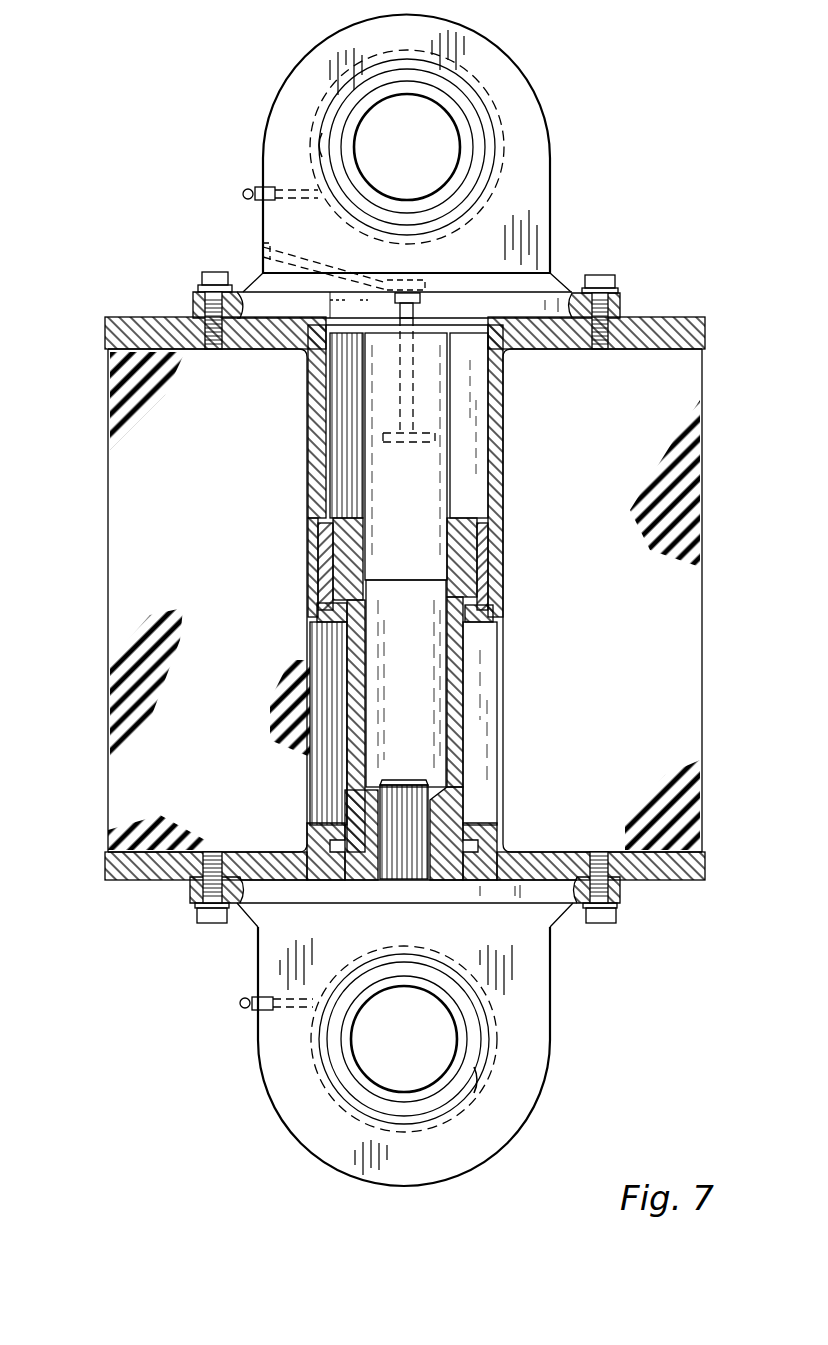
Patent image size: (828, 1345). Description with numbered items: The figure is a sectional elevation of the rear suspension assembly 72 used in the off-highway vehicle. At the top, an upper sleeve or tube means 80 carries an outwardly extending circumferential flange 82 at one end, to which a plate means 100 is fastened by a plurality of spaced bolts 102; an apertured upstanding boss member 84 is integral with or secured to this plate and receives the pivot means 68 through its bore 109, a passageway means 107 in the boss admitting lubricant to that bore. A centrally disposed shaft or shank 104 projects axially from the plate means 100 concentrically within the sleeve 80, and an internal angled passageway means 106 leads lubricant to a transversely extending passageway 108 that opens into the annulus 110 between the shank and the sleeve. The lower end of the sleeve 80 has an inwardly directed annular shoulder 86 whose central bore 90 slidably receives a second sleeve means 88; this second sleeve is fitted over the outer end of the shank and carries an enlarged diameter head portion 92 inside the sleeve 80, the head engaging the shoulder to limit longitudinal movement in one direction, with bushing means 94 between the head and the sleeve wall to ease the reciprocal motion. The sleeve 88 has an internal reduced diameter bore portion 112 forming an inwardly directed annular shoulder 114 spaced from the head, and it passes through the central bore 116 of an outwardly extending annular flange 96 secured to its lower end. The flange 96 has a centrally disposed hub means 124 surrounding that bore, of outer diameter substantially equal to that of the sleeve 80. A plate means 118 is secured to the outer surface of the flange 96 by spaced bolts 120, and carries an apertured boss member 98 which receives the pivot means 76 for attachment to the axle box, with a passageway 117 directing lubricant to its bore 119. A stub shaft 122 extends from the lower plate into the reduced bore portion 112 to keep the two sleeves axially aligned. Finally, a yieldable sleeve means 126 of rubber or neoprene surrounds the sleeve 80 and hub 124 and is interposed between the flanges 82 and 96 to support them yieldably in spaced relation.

The pivot means 68 is at (437, 137).
The rear suspension assembly 72 is at (138, 784).
The pivot means 76 is at (370, 1065).
The upper sleeve or tube means 80 is at (500, 403).
The circumferential flange 82 is at (627, 352).
The apertured upstanding boss member 84 is at (535, 208).
The annular shoulder 86 is at (482, 618).
The second sleeve means 88 is at (461, 685).
The central bore 90 is at (470, 617).
The enlarged diameter head portion 92 is at (472, 528).
The bushing means 94 is at (482, 550).
The annular flange 96 is at (645, 882).
The apertured boss member 98 is at (535, 1035).
The plate means 100 is at (546, 305).
The bolts 102 is at (608, 277).
The shaft or shank 104 is at (380, 495).
The internal angled passageway means 106 is at (407, 371).
The passageway means 107 is at (297, 190).
The transversely extending passageway 108 is at (383, 432).
The bore 109 is at (320, 135).
The annulus 110 is at (472, 454).
The reduced diameter bore portion 112 is at (377, 802).
The annular shoulder 114 is at (438, 787).
The central bore 116 is at (462, 820).
The passageway 117 is at (291, 1007).
The plate means 118 is at (538, 897).
The bore 119 is at (475, 1088).
The bolts 120 is at (217, 925).
The stub shaft 122 is at (415, 818).
The hub means 124 is at (320, 843).
The yieldable sleeve means 126 is at (123, 612).